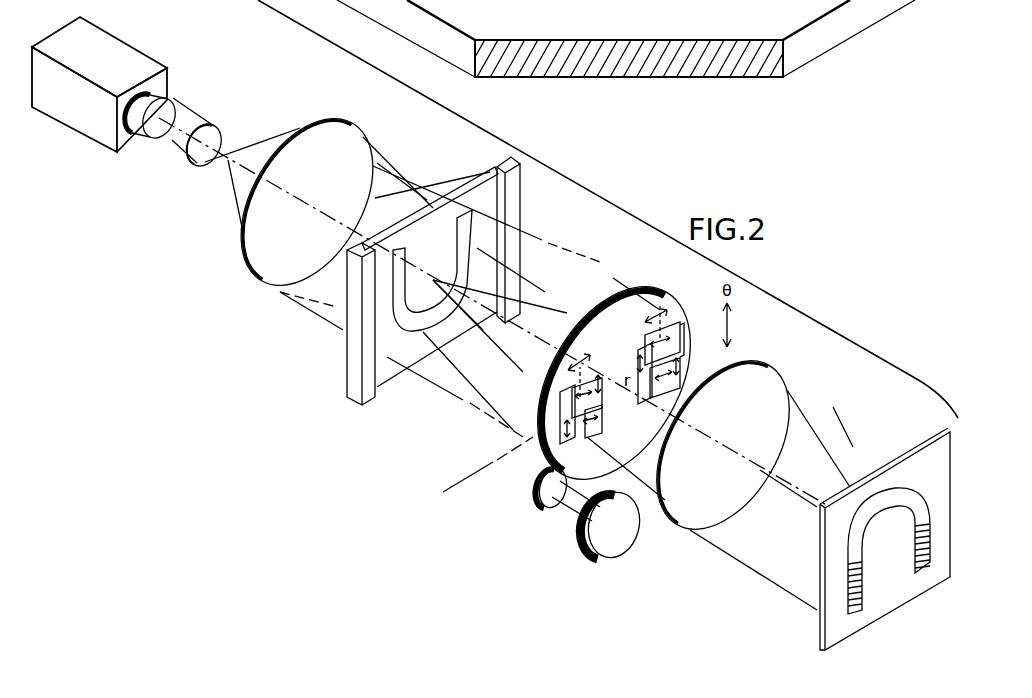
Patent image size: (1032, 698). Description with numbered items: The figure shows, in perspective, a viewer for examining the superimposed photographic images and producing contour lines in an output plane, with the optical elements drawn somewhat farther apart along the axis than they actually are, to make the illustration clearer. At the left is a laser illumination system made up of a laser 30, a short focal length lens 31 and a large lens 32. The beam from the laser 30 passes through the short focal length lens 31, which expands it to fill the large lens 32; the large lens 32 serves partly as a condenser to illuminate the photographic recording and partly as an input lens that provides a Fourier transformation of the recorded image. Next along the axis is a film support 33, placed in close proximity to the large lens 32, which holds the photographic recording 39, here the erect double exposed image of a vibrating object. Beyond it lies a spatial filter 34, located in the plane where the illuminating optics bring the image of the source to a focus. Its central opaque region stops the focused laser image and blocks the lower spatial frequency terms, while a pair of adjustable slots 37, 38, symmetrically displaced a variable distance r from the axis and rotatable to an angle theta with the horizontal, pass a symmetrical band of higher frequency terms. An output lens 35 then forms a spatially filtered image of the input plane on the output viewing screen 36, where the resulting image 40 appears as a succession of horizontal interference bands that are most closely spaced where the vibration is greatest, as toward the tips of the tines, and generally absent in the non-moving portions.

The laser 30 is at (110, 50).
The short focal length lens 31 is at (217, 127).
The large lens 32 is at (340, 123).
The film support 33 is at (498, 160).
The spatial filter 34 is at (655, 285).
The output lens 35 is at (760, 362).
The output viewing screen 36 is at (933, 433).
The adjustable slot 37 is at (603, 420).
The adjustable slot 38 is at (670, 325).
The photographic recording 39 is at (418, 228).
The image 40 is at (850, 580).